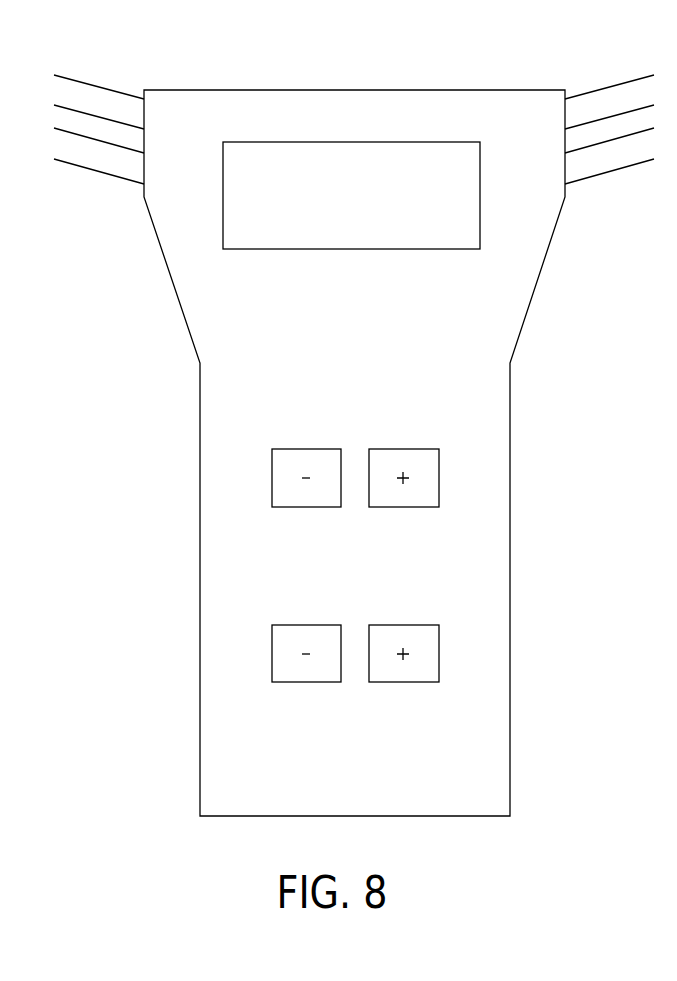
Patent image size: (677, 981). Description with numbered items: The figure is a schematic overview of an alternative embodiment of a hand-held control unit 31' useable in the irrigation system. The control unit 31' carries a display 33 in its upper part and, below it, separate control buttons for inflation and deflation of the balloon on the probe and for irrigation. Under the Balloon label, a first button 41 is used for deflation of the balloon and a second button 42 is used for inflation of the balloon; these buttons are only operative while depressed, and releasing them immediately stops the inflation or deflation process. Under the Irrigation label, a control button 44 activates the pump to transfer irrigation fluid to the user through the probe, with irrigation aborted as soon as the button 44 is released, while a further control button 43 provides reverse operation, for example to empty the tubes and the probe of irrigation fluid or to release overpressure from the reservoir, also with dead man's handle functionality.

The control unit 31' is at (354, 445).
The display 33 is at (426, 164).
The first button 41 is at (280, 488).
The second button 42 is at (430, 488).
The further control button 43 is at (280, 648).
The control button 44 is at (430, 647).